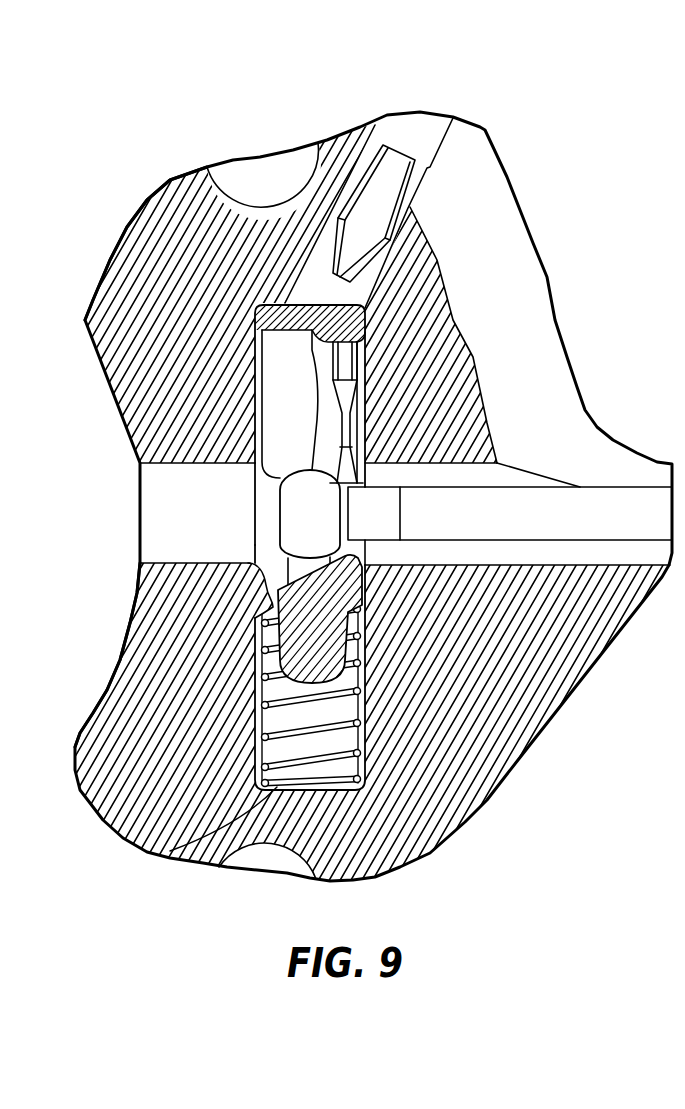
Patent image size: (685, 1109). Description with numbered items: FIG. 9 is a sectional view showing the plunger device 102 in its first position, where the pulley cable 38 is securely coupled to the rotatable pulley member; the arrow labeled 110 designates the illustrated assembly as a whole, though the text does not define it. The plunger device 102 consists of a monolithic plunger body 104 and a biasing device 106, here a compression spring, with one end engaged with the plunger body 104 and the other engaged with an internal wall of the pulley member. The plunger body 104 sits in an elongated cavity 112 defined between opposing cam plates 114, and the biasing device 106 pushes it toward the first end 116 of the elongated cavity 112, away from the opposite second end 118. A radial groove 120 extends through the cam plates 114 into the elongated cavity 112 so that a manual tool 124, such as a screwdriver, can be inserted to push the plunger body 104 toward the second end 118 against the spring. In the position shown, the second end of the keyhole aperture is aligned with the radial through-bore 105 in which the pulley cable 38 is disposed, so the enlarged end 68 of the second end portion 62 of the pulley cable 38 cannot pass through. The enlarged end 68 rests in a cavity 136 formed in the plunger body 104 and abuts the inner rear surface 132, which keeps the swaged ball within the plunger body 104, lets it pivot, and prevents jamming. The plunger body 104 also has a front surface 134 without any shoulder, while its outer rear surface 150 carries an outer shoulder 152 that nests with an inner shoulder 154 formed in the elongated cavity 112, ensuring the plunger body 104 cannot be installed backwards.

The valve assembly 110 is at (342, 511).
The plunger body 104 is at (235, 386).
The plunger device 102 is at (208, 654).
The elongated cavity 112 is at (163, 320).
The cam plates 114 is at (473, 740).
The first end 116 is at (287, 300).
The second end 118 is at (172, 850).
The radial groove 120 is at (400, 247).
The manual tool 124 is at (415, 143).
The front surface 134 is at (363, 367).
The inner rear surface 132 is at (343, 437).
The cavity 136 is at (290, 438).
The radial through-bore 105 is at (215, 500).
The enlarged end 68 is at (322, 525).
The pulley cable 38 is at (528, 510).
The second end portion 62 is at (456, 548).
The outer shoulder 152 is at (265, 481).
The outer rear surface 150 is at (273, 543).
The inner shoulder 154 is at (273, 587).
The biasing device 106 is at (369, 745).